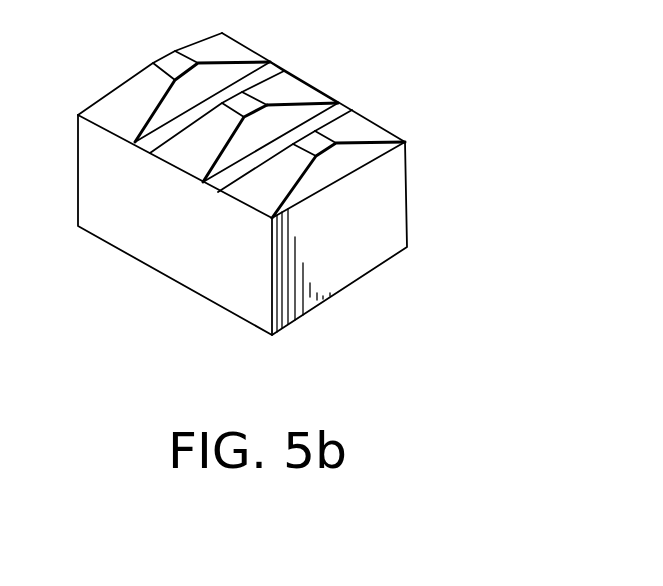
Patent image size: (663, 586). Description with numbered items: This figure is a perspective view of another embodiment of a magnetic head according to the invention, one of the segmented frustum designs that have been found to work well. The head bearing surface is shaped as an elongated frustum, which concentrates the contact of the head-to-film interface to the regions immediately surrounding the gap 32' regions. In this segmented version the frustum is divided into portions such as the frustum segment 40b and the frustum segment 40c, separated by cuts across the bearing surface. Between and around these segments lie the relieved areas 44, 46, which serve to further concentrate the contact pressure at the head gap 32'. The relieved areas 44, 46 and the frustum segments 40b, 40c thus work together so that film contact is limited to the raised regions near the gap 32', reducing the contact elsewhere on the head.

The relieved area 44 is at (272, 73).
The inclined groove surface 40c is at (308, 90).
The relieved area 46 is at (345, 108).
The gap 32' is at (407, 126).
The inclined groove surface 40b is at (362, 155).